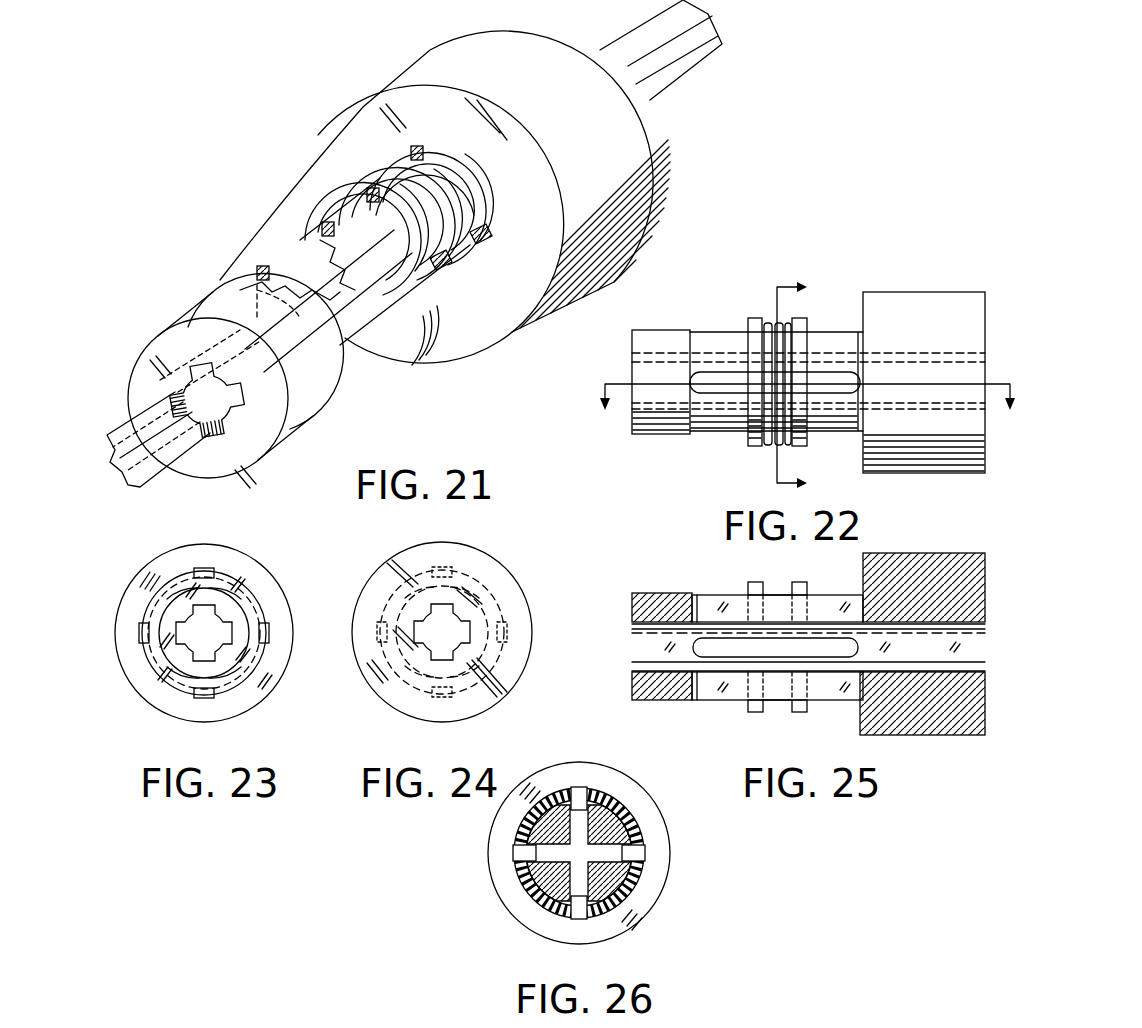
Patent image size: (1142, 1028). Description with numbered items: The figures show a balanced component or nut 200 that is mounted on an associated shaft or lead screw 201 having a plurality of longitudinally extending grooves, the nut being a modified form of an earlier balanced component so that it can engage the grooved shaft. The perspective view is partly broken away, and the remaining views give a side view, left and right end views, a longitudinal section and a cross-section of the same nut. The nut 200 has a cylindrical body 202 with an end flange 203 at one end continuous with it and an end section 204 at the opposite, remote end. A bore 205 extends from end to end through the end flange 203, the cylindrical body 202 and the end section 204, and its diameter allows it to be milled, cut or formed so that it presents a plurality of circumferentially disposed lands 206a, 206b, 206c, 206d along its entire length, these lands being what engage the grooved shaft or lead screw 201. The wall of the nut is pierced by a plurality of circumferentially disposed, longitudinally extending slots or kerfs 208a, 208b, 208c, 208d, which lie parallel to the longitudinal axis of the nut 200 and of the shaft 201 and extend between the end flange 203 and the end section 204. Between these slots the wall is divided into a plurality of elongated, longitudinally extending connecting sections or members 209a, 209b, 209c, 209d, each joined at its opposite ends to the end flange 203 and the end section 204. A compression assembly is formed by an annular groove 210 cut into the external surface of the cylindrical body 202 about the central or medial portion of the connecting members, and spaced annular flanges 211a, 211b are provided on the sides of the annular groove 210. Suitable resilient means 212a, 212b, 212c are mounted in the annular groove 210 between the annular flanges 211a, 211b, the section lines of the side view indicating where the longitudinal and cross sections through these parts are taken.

In FIG. 21, the balanced component or nut 200 is at (352, 98).
In FIG. 22, the balanced component or nut 200 is at (871, 287).
In FIG. 21, the shaft or lead screw 201 is at (665, 60).
In FIG. 22, the shaft or lead screw 201 is at (702, 407).
In FIG. 21, the cylindrical body 202 is at (473, 282).
In FIG. 22, the cylindrical body 202 is at (828, 342).
In FIG. 25, the cylindrical body 202 is at (808, 647).
In FIG. 21, the end flange 203 is at (448, 56).
In FIG. 22, the end flange 203 is at (910, 292).
In FIG. 23, the end flange 203 is at (243, 562).
In FIG. 24, the end flange 203 is at (485, 562).
In FIG. 25, the end flange 203 is at (920, 553).
In FIG. 26, the end flange 203 is at (556, 782).
In FIG. 21, the end section 204 is at (200, 310).
In FIG. 22, the end section 204 is at (650, 330).
In FIG. 23, the end section 204 is at (243, 617).
In FIG. 24, the end section 204 is at (442, 632).
In FIG. 25, the end section 204 is at (655, 593).
In FIG. 21, the bore 205 is at (243, 396).
In FIG. 22, the bore 205 is at (905, 362).
In FIG. 23, the bore 205 is at (218, 643).
In FIG. 24, the bore 205 is at (456, 642).
In FIG. 25, the bore 205 is at (775, 647).
In FIG. 23, the land 206a is at (187, 603).
In FIG. 24, the land 206a is at (460, 612).
In FIG. 23, the land 206b is at (187, 650).
In FIG. 24, the land 206b is at (467, 653).
In FIG. 25, the land 206b is at (633, 633).
In FIG. 23, the land 206c is at (223, 657).
In FIG. 24, the land 206c is at (425, 653).
In FIG. 25, the land 206c is at (650, 660).
In FIG. 23, the land 206d is at (227, 612).
In FIG. 24, the land 206d is at (422, 615).
In FIG. 21, the slot or kerf 208a is at (362, 188).
In FIG. 23, the slot or kerf 208a is at (205, 567).
In FIG. 24, the slot or kerf 208a is at (446, 567).
In FIG. 26, the slot or kerf 208a is at (579, 800).
In FIG. 23, the slot or kerf 208b is at (139, 633).
In FIG. 24, the slot or kerf 208b is at (507, 634).
In FIG. 25, the slot or kerf 208b is at (712, 605).
In FIG. 26, the slot or kerf 208b is at (520, 855).
In FIG. 23, the slot or kerf 208c is at (203, 699).
In FIG. 24, the slot or kerf 208c is at (450, 698).
In FIG. 25, the slot or kerf 208c is at (820, 648).
In FIG. 26, the slot or kerf 208c is at (579, 906).
In FIG. 21, the slot or kerf 208d is at (488, 246).
In FIG. 23, the slot or kerf 208d is at (362, 633).
In FIG. 24, the slot or kerf 208d is at (377, 633).
In FIG. 25, the slot or kerf 208d is at (712, 680).
In FIG. 26, the slot or kerf 208d is at (642, 855).
In FIG. 26, the connecting section or member 209a is at (538, 822).
In FIG. 26, the connecting section or member 209b is at (545, 890).
In FIG. 26, the connecting section or member 209c is at (612, 886).
In FIG. 26, the connecting section or member 209d is at (622, 820).
In FIG. 25, the annular groove 210 is at (778, 593).
In FIG. 21, the annular flange 211a is at (366, 239).
In FIG. 22, the annular flange 211a is at (750, 330).
In FIG. 25, the annular flange 211a is at (752, 588).
In FIG. 21, the annular flange 211b is at (416, 216).
In FIG. 22, the annular flange 211b is at (800, 320).
In FIG. 25, the annular flange 211b is at (798, 589).
In FIG. 21, the resilient means 212a is at (418, 355).
In FIG. 22, the resilient means 212a is at (768, 443).
In FIG. 21, the resilient means 212b is at (430, 345).
In FIG. 22, the resilient means 212b is at (778, 445).
In FIG. 26, the resilient means 212b is at (606, 795).
In FIG. 21, the resilient means 212c is at (436, 335).
In FIG. 22, the resilient means 212c is at (788, 445).